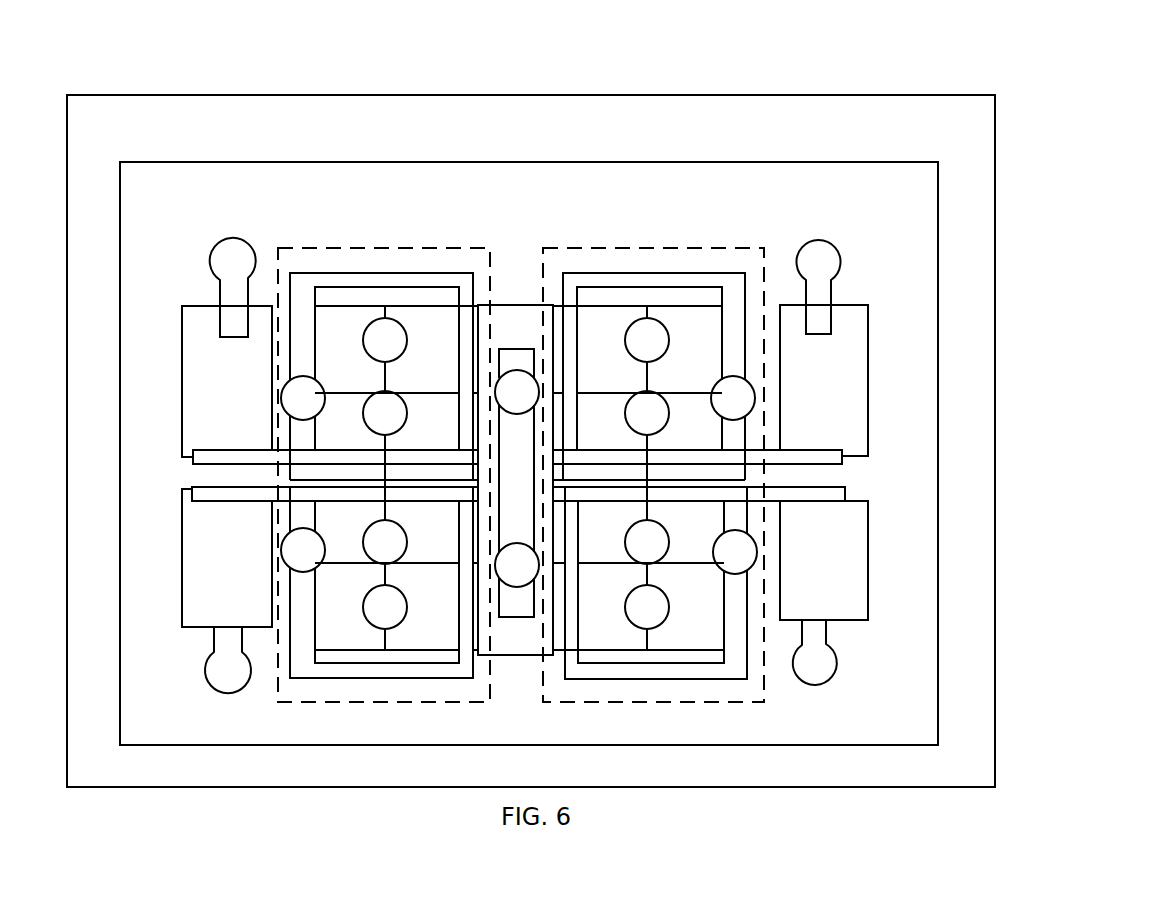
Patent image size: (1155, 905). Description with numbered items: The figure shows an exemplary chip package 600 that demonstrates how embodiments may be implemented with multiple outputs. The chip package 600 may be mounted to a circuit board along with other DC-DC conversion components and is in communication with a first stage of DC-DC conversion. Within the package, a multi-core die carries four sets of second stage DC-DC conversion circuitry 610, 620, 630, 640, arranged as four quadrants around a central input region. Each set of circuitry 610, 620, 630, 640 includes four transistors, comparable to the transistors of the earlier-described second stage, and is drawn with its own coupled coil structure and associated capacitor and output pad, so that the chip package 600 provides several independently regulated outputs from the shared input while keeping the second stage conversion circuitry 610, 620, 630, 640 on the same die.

The chip package 600 is at (601, 412).
The second stage DC-DC conversion circuitry 610 is at (388, 248).
The second stage DC-DC conversion circuitry 620 is at (668, 248).
The second stage DC-DC conversion circuitry 630 is at (367, 702).
The second stage DC-DC conversion circuitry 640 is at (657, 702).